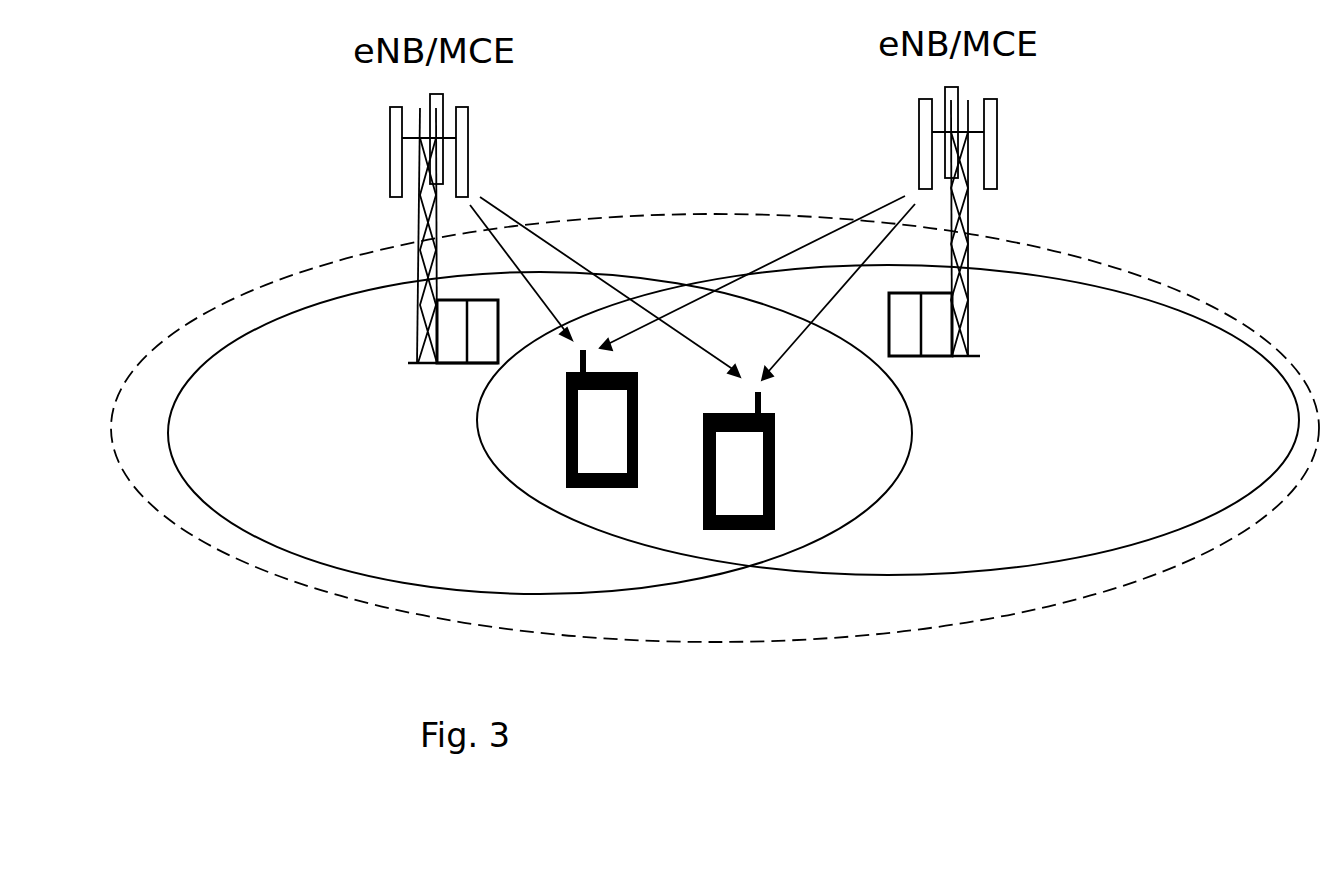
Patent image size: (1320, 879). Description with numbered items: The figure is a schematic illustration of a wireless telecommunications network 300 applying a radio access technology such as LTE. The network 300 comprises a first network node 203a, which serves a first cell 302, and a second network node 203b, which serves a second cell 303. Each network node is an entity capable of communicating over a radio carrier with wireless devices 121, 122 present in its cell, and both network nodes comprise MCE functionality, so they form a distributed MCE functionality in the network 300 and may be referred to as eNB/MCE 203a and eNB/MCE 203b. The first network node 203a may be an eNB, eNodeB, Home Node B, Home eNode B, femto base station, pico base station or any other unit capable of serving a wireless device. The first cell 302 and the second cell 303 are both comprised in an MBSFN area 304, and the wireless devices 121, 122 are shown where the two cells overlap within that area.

The wireless device 121 is at (566, 400).
The wireless device 122 is at (775, 425).
The first network node 203a is at (417, 337).
The second network node 203b is at (968, 313).
The wireless telecommunications network 300 is at (1025, 675).
The first cell 302 is at (287, 548).
The second cell 303 is at (1170, 533).
The MBSFN area 304 is at (1068, 256).